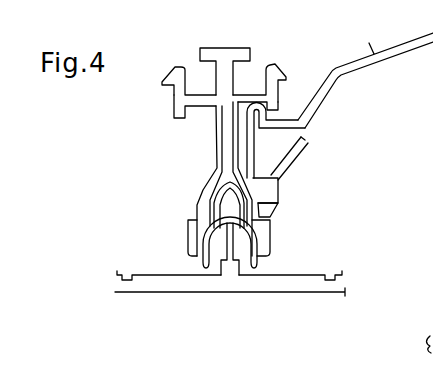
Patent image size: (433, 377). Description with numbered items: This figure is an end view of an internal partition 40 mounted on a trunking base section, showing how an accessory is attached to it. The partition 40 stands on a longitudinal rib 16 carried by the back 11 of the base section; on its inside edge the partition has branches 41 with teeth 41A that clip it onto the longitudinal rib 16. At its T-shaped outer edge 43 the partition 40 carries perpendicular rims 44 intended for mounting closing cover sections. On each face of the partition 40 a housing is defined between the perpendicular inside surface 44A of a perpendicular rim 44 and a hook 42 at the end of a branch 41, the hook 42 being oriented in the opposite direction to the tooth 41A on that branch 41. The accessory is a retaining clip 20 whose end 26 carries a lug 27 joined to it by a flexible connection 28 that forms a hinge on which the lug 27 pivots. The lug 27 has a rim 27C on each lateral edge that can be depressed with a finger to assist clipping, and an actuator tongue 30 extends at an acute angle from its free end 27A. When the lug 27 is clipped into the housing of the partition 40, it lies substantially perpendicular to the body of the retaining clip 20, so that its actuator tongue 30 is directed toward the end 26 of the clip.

The back 11 is at (282, 290).
The longitudinal rib 16 is at (204, 274).
The retaining clip 20 is at (340, 134).
The end 26 is at (322, 90).
The lug 27 is at (283, 167).
The free end 27A is at (270, 227).
The rim 27C is at (284, 203).
The flexible connection 28 is at (278, 104).
The actuator tongue 30 is at (300, 156).
The internal partition 40 is at (230, 174).
The branch 41 is at (242, 151).
The tooth 41A is at (220, 262).
The hook 42 is at (185, 236).
The T-shaped outer edge 43 is at (224, 48).
The perpendicular rim 44 is at (193, 95).
The perpendicular inside surface 44A is at (216, 118).